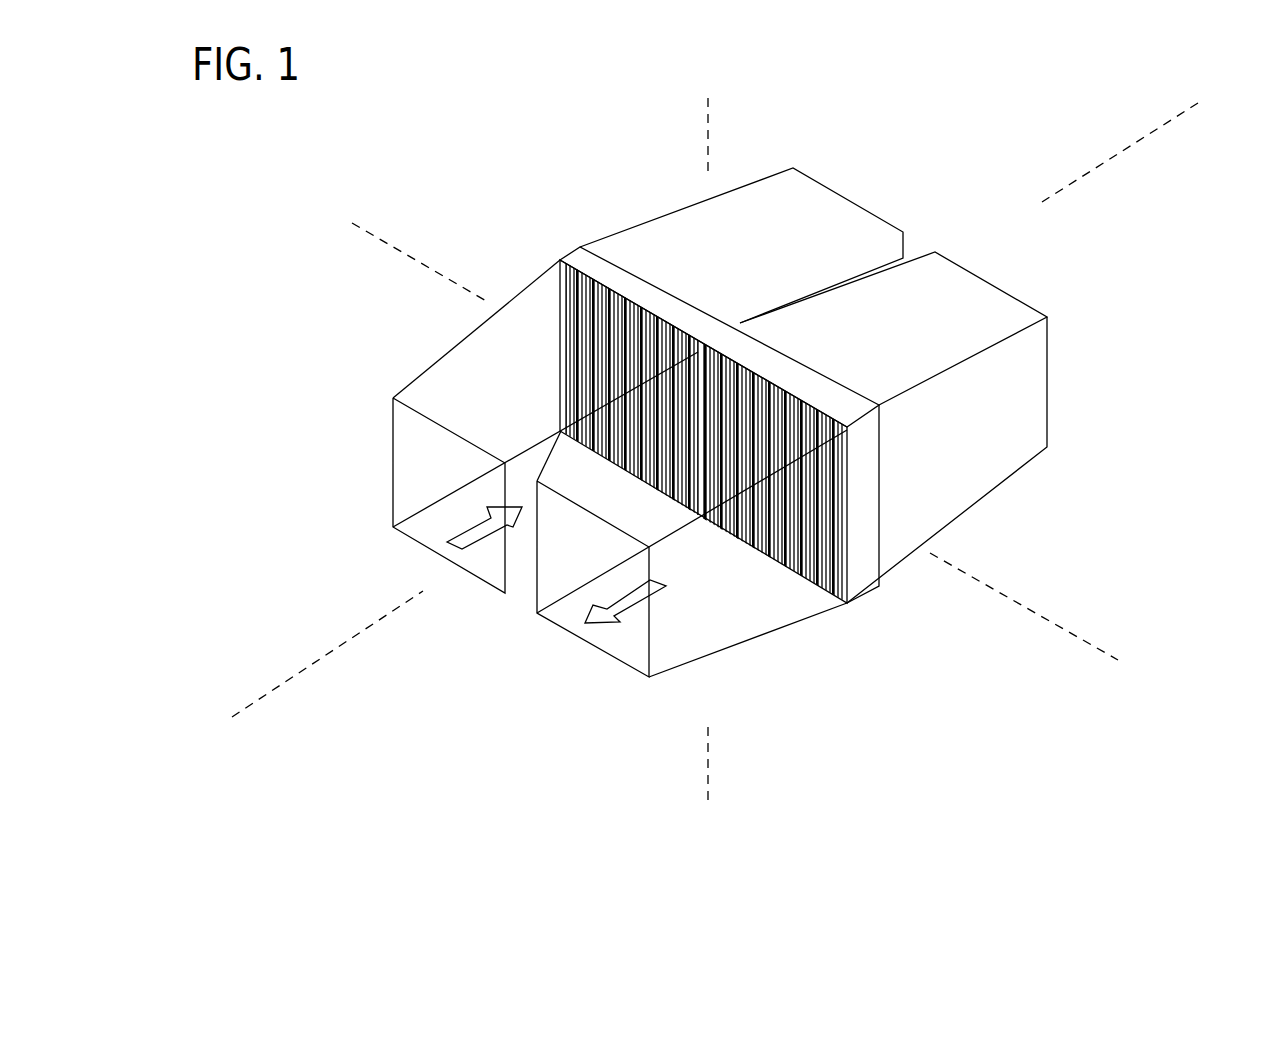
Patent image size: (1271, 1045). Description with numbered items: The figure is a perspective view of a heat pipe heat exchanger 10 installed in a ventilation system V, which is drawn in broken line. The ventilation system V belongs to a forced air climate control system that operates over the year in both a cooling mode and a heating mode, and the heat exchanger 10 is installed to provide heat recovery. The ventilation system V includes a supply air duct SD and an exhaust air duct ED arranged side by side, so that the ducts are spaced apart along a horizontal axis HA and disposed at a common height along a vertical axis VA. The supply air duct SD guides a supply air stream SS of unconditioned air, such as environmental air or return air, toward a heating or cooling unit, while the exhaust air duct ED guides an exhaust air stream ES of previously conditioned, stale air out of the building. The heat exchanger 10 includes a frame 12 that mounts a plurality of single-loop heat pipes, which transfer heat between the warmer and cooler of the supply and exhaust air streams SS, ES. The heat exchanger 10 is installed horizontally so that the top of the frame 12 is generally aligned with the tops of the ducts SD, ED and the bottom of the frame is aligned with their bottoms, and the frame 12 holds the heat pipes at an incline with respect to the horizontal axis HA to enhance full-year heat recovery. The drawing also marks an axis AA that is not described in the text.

The heat pipe heat exchanger 10 is at (892, 682).
The frame 12 is at (582, 246).
The ventilation system V is at (763, 177).
The vertical axis VA is at (709, 455).
The longitudinal axis AA is at (711, 411).
The horizontal axis HA is at (739, 437).
The supply air duct SD is at (430, 367).
The supply air stream SS is at (461, 548).
The exhaust air stream ES is at (602, 623).
The exhaust air duct ED is at (723, 650).